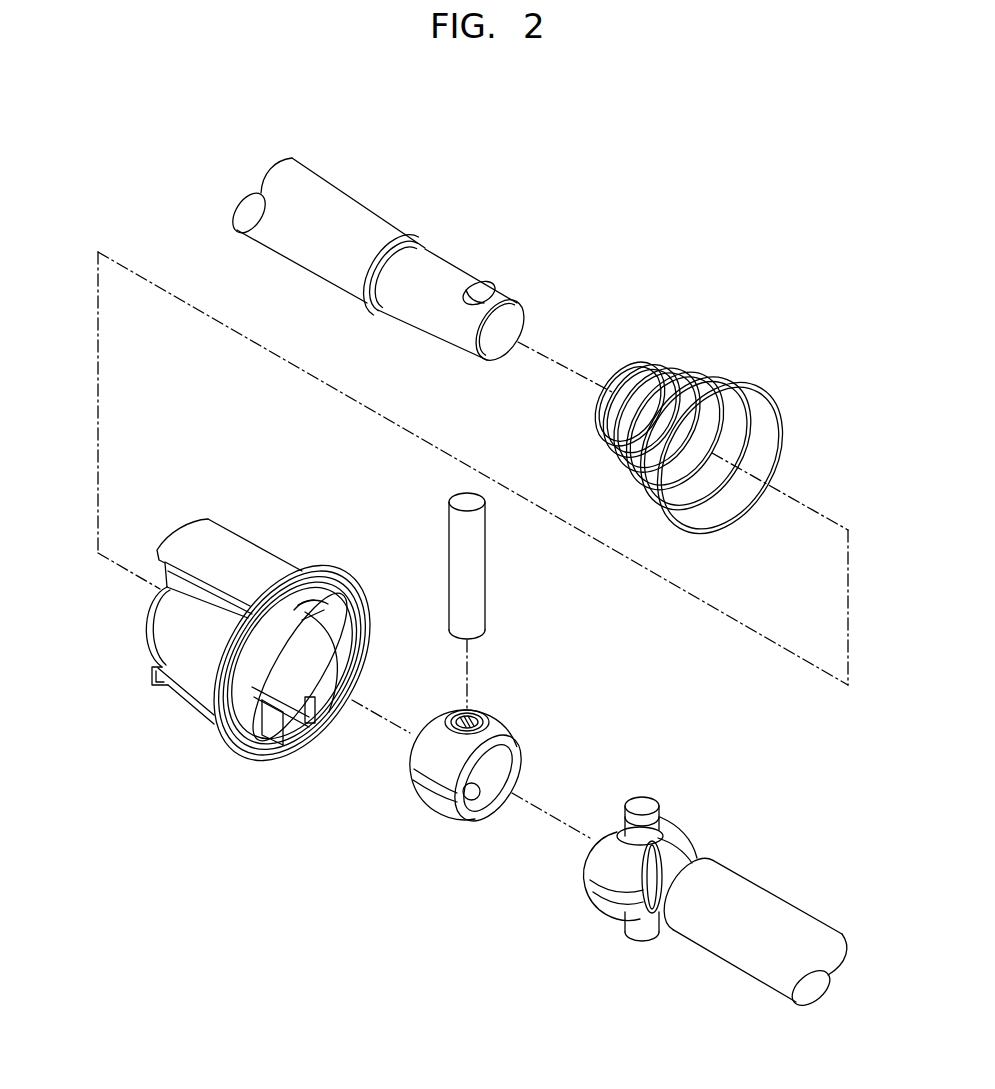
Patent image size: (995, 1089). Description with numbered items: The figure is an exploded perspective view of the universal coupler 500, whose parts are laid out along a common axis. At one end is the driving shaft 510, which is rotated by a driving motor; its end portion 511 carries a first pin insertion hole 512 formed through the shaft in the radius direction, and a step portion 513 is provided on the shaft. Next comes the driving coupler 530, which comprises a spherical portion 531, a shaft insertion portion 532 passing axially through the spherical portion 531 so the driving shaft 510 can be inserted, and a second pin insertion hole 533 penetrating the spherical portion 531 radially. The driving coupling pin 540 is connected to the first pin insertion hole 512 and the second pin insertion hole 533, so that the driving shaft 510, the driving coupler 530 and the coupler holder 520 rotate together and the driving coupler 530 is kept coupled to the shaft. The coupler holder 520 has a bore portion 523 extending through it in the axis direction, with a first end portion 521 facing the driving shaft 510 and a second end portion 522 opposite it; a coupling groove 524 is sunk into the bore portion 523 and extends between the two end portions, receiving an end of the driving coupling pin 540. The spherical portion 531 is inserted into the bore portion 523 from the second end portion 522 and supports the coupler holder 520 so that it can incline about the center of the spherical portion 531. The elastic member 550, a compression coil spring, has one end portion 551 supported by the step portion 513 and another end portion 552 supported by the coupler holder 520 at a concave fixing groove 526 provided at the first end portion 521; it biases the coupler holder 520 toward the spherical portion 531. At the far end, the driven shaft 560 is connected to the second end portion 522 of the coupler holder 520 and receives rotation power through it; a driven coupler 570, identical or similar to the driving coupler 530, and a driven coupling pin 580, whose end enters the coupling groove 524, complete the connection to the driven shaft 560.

The universal coupler 500 is at (778, 208).
The driving shaft 510 is at (397, 254).
The end portion 511 is at (518, 302).
The first pin insertion hole 512 is at (482, 289).
The step portion 513 is at (425, 247).
The coupler holder 520 is at (252, 631).
The first end portion 521 is at (146, 613).
The second end portion 522 is at (365, 612).
The bore portion 523 is at (320, 643).
The coupling groove 524 is at (330, 610).
The fixing groove 526 is at (157, 668).
The driving coupler 530 is at (466, 732).
The spherical portion 531 is at (438, 772).
The shaft insertion portion 532 is at (497, 762).
The second pin insertion hole 533 is at (469, 727).
The driving coupling pin 540 is at (472, 580).
The elastic member 550 is at (718, 430).
The end portion 551 is at (636, 366).
The other end portion 552 is at (784, 452).
The driven shaft 560 is at (777, 901).
The driven coupler 570 is at (663, 842).
The driven coupling pin 580 is at (648, 798).